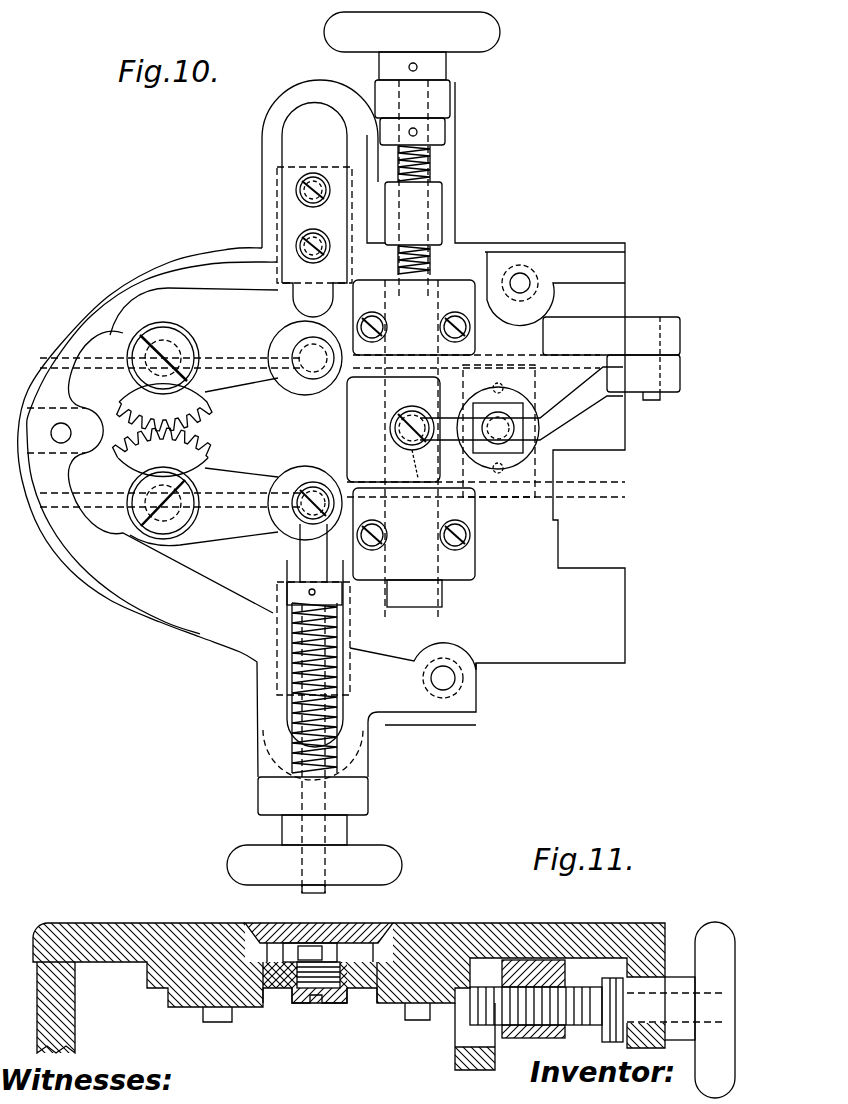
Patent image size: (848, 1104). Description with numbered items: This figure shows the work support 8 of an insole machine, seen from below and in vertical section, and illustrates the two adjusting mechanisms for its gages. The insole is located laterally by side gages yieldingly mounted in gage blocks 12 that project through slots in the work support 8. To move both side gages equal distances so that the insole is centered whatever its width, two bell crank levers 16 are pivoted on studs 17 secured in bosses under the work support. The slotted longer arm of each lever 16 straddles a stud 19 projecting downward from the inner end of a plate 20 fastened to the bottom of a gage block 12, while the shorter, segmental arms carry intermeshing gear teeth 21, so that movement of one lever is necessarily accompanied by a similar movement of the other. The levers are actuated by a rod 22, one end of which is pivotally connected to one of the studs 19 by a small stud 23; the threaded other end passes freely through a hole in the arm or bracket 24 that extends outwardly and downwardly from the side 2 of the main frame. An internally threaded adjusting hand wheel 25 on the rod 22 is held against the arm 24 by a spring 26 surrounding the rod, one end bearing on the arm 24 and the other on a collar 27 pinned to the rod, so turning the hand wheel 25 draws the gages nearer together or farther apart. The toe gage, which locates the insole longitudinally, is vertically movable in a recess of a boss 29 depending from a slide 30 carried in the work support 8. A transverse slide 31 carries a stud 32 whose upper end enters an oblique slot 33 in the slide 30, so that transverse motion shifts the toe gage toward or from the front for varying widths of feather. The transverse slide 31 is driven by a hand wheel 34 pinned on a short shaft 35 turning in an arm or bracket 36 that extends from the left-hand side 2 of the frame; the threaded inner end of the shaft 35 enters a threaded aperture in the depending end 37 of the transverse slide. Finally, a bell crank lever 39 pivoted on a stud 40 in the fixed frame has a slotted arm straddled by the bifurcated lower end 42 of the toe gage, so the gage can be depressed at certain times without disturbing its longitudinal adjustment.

In FIG. 11, the side of the main frame 2 is at (72, 1032).
In FIG. 10, the work support 8 is at (140, 266).
In FIG. 11, the work support 8 is at (135, 923).
In FIG. 10, the gage block 12 is at (279, 183).
In FIG. 10, the bell crank lever 16 is at (220, 335).
In FIG. 10, the stud 17 is at (168, 345).
In FIG. 10, the stud 19 is at (303, 372).
In FIG. 10, the plate 20 is at (295, 218).
In FIG. 10, the gear teeth 21 is at (192, 432).
In FIG. 10, the rod 22 is at (312, 561).
In FIG. 10, the small stud 23 is at (310, 497).
In FIG. 10, the arm or bracket 24 is at (370, 786).
In FIG. 10, the adjusting hand wheel 25 is at (390, 855).
In FIG. 10, the spring 26 is at (292, 727).
In FIG. 10, the collar 27 is at (290, 612).
In FIG. 10, the boss 29 is at (518, 462).
In FIG. 11, the slide 30 is at (265, 917).
In FIG. 10, the transverse slide 31 is at (437, 276).
In FIG. 11, the transverse slide 31 is at (362, 992).
In FIG. 10, the stud 32 is at (417, 450).
In FIG. 11, the stud 32 is at (305, 1000).
In FIG. 10, the oblique slot 33 is at (392, 420).
In FIG. 11, the oblique slot 33 is at (350, 948).
In FIG. 10, the hand wheel 34 is at (495, 34).
In FIG. 11, the hand wheel 34 is at (714, 930).
In FIG. 10, the short shaft 35 is at (432, 166).
In FIG. 11, the short shaft 35 is at (472, 1020).
In FIG. 10, the arm or bracket 36 is at (452, 109).
In FIG. 11, the arm or bracket 36 is at (624, 972).
In FIG. 10, the depending end 37 is at (444, 208).
In FIG. 11, the depending end 37 is at (545, 1037).
In FIG. 10, the bell crank lever 39 is at (580, 396).
In FIG. 10, the stud 40 is at (655, 400).
In FIG. 10, the bifurcated lower end 42 is at (508, 405).